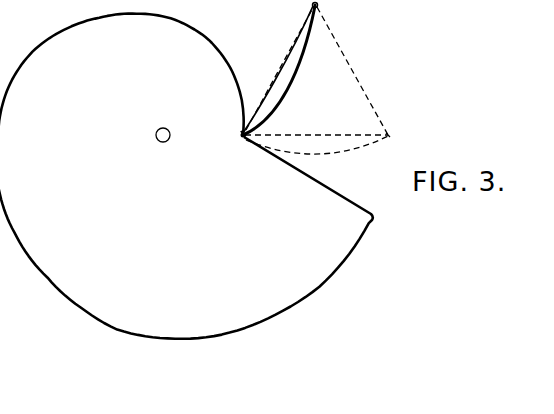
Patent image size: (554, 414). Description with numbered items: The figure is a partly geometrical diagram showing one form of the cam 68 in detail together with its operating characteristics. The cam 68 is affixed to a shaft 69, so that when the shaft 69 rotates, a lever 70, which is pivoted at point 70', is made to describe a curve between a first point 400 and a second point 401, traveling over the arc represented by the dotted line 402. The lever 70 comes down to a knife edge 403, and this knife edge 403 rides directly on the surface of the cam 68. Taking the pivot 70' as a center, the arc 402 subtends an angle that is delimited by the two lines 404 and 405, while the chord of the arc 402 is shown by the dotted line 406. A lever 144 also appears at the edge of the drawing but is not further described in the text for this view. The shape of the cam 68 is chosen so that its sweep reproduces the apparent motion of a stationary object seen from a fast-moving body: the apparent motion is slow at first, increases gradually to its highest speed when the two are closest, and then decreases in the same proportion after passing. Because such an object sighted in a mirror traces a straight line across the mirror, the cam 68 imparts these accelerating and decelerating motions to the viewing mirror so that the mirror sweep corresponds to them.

The cam 68 is at (367, 231).
The shaft 69 is at (158, 129).
The lever 70 is at (288, 69).
The pivot of lever 70' is at (337, 14).
The lever 144 is at (423, 1).
The point 400 is at (240, 140).
The point 401 is at (390, 132).
The arc 402 is at (347, 153).
The knife edge 403 is at (240, 132).
The line 404 is at (284, 62).
The line 405 is at (360, 73).
The chord 406 is at (318, 126).